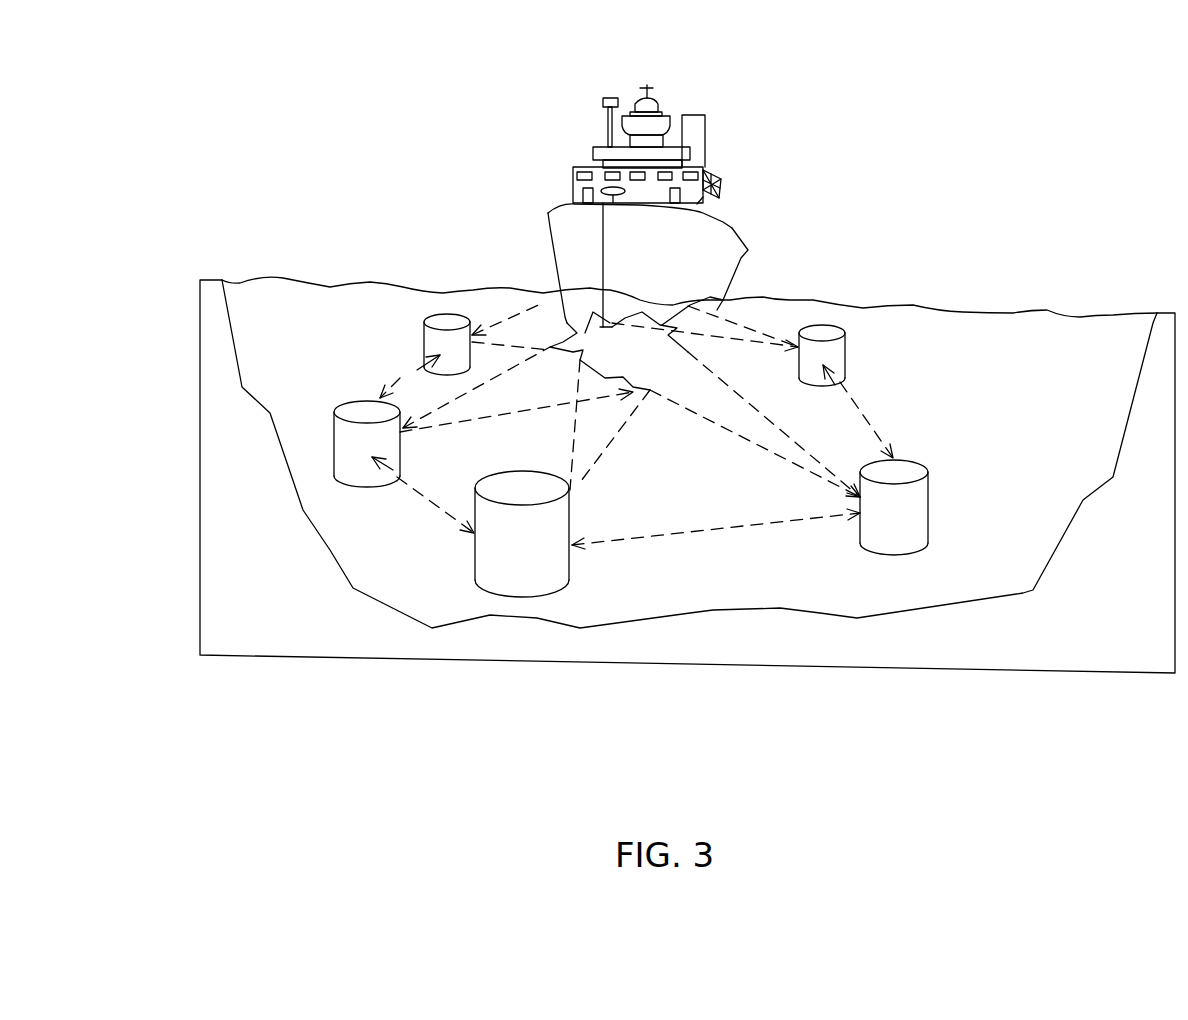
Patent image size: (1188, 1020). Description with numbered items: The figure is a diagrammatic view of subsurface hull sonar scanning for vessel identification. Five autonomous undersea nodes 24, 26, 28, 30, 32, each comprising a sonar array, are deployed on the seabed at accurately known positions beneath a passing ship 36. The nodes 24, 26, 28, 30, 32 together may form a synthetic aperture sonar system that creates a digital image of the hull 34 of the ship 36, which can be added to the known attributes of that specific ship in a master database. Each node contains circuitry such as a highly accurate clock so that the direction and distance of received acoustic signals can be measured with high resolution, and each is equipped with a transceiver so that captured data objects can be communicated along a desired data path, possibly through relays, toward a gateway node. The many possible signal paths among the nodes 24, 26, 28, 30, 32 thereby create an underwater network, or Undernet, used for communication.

The node 24 is at (447, 345).
The node 26 is at (362, 408).
The node 28 is at (537, 520).
The node 30 is at (898, 478).
The node 32 is at (832, 360).
The hull 34 is at (558, 303).
The ship 36 is at (720, 183).